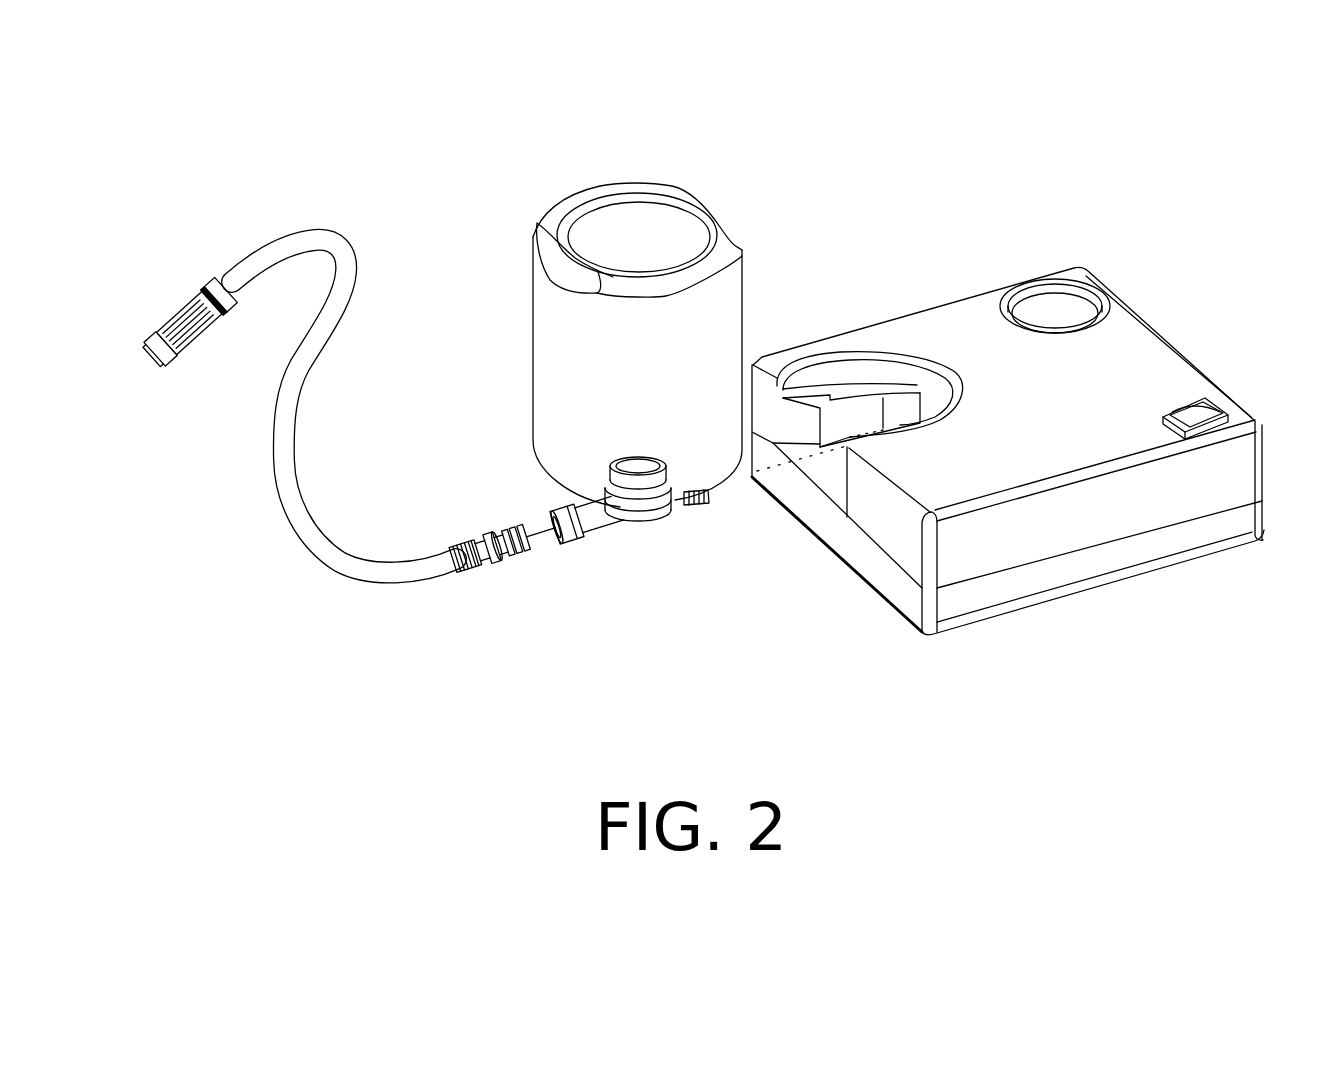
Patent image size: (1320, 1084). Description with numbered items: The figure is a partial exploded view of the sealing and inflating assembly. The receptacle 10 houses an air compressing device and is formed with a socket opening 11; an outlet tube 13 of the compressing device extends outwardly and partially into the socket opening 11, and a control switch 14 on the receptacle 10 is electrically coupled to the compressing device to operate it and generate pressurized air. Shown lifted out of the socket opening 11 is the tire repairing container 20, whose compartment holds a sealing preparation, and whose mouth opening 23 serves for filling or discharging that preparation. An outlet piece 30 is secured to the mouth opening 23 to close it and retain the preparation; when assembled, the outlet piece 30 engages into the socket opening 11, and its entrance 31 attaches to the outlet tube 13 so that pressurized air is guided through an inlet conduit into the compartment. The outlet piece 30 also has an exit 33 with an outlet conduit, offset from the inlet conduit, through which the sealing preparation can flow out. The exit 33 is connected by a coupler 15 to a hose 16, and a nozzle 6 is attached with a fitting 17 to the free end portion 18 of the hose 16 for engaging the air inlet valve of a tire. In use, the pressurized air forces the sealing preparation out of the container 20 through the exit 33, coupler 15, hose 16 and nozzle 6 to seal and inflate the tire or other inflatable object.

The nozzle 6 is at (163, 377).
The receptacle 10 is at (1098, 568).
The socket opening 11 is at (836, 477).
The outlet tube 13 is at (922, 407).
The control switch 14 is at (1190, 413).
The coupler 15 is at (492, 560).
The hose 16 is at (328, 556).
The fitting 17 is at (198, 306).
The free end portion 18 is at (233, 274).
The tire repairing container 20 is at (547, 333).
The mouth opening 23 is at (598, 462).
The outlet piece 30 is at (652, 513).
The entrance 31 is at (699, 505).
The exit 33 is at (580, 545).